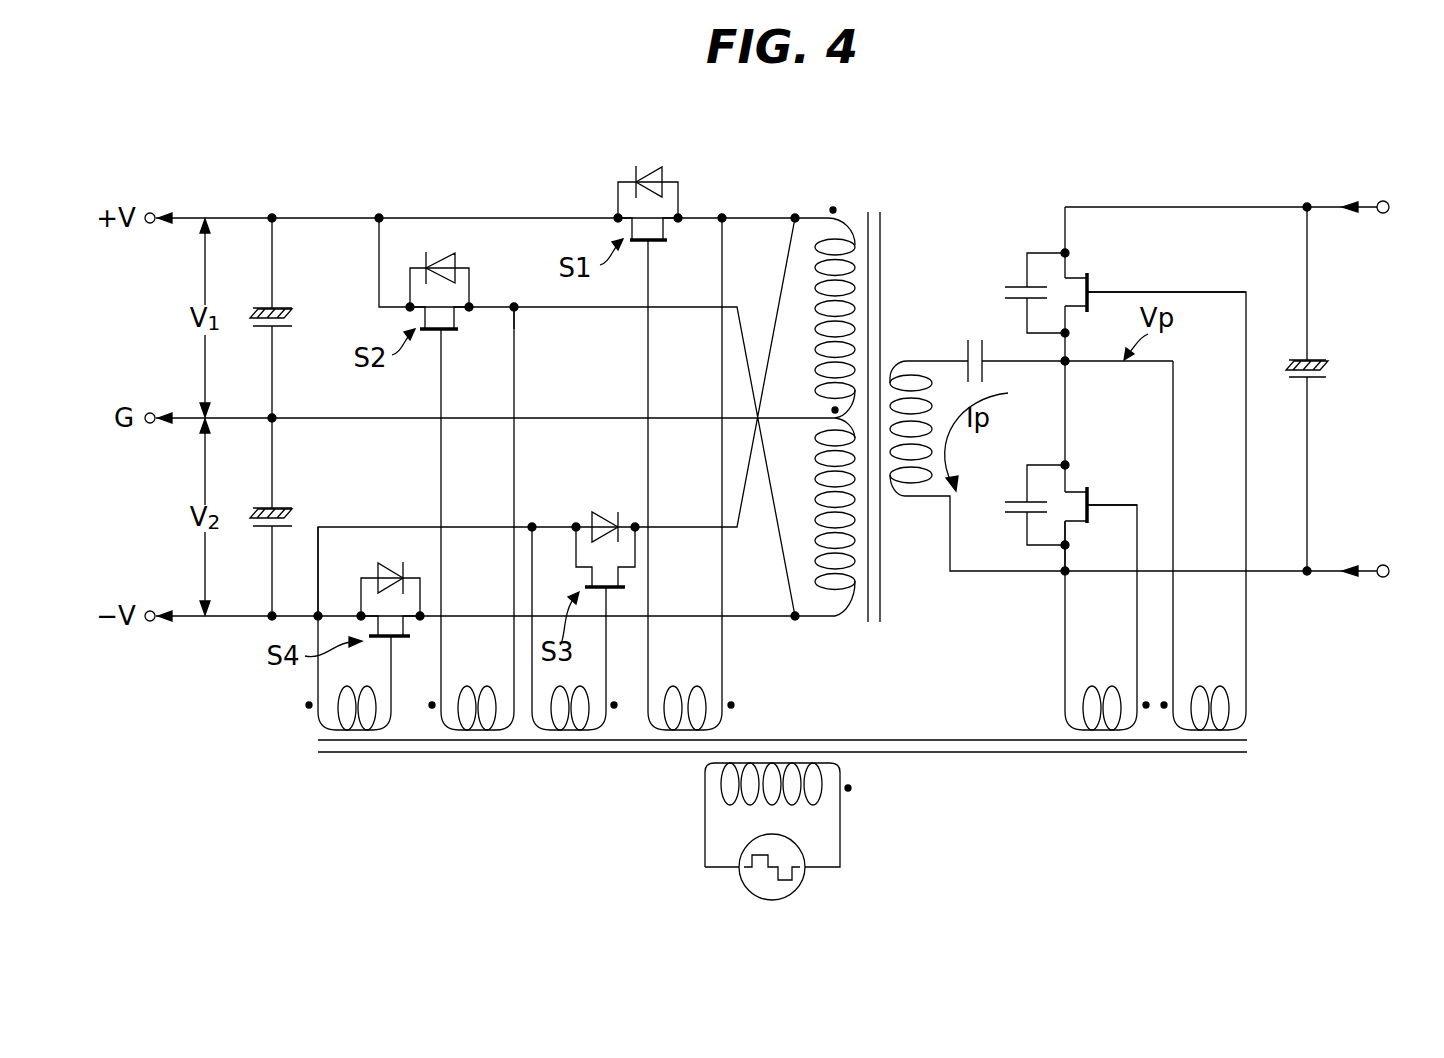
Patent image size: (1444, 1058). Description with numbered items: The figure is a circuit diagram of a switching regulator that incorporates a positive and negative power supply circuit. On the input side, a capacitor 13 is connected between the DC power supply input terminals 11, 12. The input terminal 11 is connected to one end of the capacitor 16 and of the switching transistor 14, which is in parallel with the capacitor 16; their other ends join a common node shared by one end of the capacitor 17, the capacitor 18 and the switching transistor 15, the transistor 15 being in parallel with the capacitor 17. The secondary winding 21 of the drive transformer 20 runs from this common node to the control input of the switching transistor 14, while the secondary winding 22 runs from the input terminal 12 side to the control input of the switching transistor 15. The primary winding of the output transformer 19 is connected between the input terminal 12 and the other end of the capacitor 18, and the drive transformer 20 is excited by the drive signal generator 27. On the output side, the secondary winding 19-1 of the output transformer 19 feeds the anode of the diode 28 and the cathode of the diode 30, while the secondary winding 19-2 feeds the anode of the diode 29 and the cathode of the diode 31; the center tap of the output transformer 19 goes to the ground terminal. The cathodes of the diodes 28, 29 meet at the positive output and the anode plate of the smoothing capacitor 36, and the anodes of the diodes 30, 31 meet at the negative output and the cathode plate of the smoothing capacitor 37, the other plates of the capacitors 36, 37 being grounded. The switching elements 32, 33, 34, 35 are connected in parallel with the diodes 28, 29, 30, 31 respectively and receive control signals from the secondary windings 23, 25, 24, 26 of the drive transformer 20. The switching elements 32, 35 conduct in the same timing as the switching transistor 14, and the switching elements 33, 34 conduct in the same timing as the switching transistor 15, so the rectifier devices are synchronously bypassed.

The DC power supply input terminal 11 is at (1386, 200).
The DC power supply input terminal 12 is at (1386, 564).
The capacitor 13 is at (1320, 358).
The switching transistor 14 is at (1092, 278).
The switching transistor 15 is at (1092, 492).
The capacitor 16 is at (1020, 285).
The capacitor 17 is at (1020, 500).
The capacitor 18 is at (966, 352).
The output transformer 19 is at (874, 212).
The secondary winding 19-1 is at (857, 272).
The secondary winding 19-2 is at (857, 584).
The drive transformer 20 is at (1249, 742).
The secondary winding 21 is at (1210, 730).
The secondary winding 22 is at (1100, 730).
The secondary winding 23 is at (668, 730).
The secondary winding 24 is at (570, 730).
The secondary winding 25 is at (477, 730).
The secondary winding 26 is at (357, 730).
The drive signal generator 27 is at (798, 892).
The diode 28 is at (646, 167).
The diode 29 is at (455, 246).
The diode 30 is at (612, 510).
The diode 31 is at (390, 556).
The switching element 32 is at (662, 245).
The switching element 33 is at (452, 333).
The switching element 34 is at (622, 590).
The switching element 35 is at (395, 640).
The smoothing capacitor 36 is at (290, 305).
The smoothing capacitor 37 is at (290, 505).